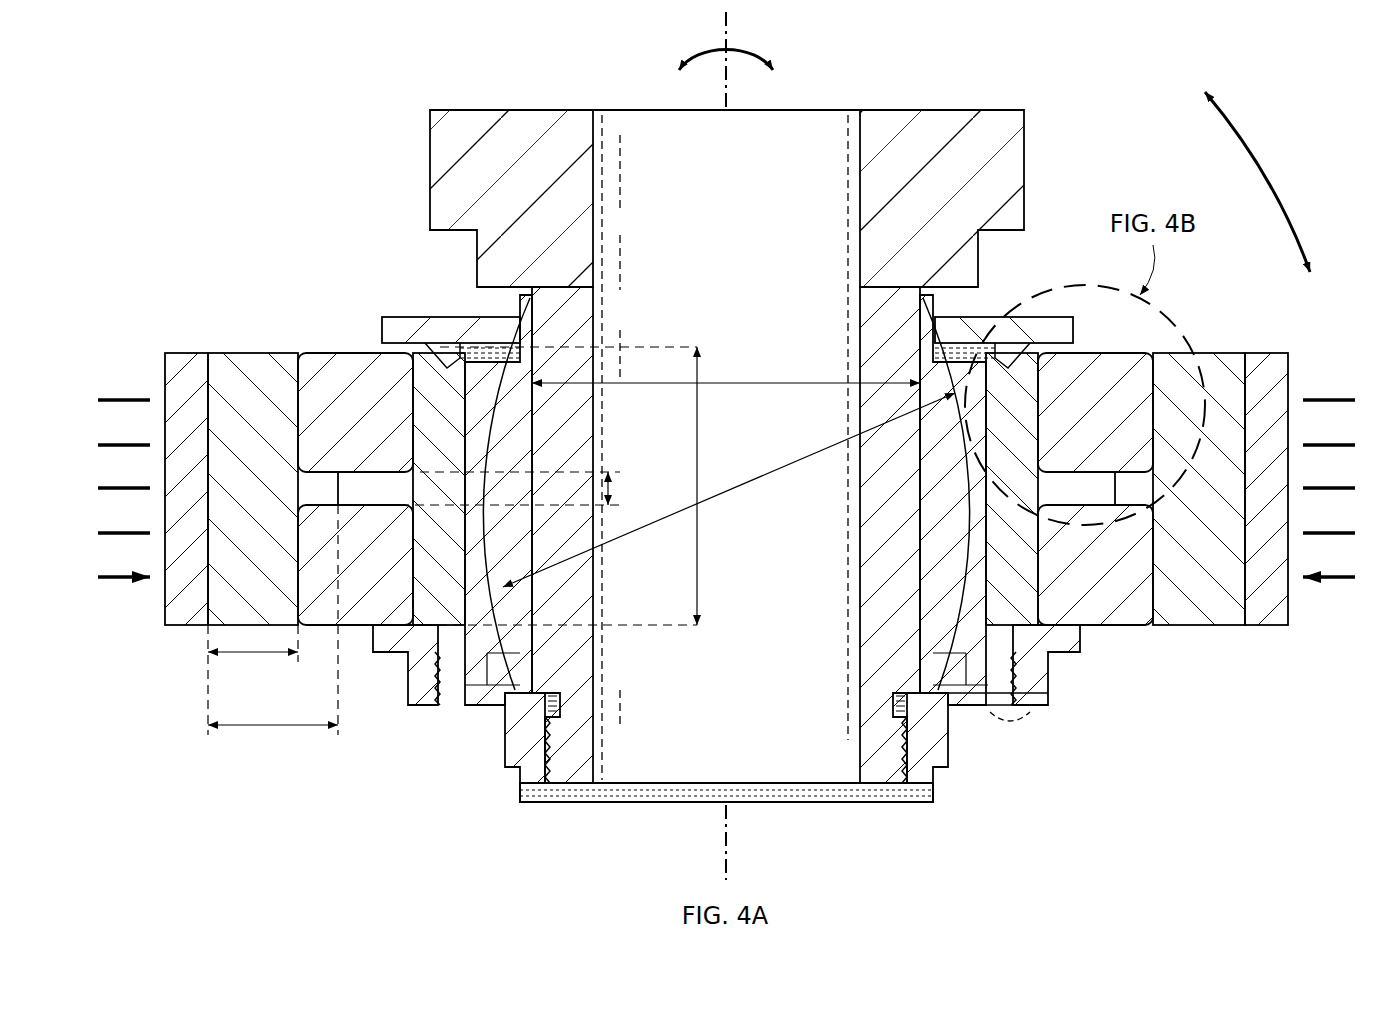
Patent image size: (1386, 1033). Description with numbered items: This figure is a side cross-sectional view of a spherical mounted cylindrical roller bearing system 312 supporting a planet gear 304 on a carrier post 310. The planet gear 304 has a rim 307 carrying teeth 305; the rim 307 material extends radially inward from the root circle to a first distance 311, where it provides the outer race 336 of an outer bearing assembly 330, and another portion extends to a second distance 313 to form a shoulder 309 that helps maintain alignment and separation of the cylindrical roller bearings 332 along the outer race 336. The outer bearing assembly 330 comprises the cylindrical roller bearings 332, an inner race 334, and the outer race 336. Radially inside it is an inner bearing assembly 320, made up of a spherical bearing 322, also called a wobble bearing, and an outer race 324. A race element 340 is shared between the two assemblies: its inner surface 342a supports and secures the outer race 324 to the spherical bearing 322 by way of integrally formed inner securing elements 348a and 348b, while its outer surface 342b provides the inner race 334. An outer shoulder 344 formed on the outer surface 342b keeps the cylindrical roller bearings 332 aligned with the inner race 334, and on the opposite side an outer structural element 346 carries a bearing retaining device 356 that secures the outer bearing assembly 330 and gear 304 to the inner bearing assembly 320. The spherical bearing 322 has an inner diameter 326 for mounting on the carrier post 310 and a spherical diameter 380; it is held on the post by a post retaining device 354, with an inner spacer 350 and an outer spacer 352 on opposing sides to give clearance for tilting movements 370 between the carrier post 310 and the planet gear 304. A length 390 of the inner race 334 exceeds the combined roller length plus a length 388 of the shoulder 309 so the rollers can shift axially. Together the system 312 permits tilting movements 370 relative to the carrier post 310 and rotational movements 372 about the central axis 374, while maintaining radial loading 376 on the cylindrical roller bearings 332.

The planet gear 304 is at (691, 462).
The teeth 305 is at (172, 608).
The rim 307 is at (248, 352).
The shoulder 309 is at (348, 472).
The carrier post 310 is at (945, 110).
The first distance 311 is at (252, 656).
The spherical mounted cylindrical roller bearing system 312 is at (313, 160).
The second distance 313 is at (270, 729).
The inner bearing assembly 320 is at (796, 439).
The spherical bearing 322 is at (725, 497).
The outer race 324 is at (726, 489).
The inner diameter 326 is at (725, 383).
The outer bearing assembly 330 is at (720, 473).
The cylindrical roller bearings 332 is at (362, 352).
The inner race 334 is at (410, 557).
The outer race 336 is at (305, 368).
The race element 340 is at (455, 448).
The inner surface 342a is at (520, 438).
The outer surface 342b is at (450, 400).
The outer shoulder 344 is at (1040, 318).
The outer structural element 346 is at (1005, 728).
The inner securing element 348a is at (532, 340).
The inner securing element 348b is at (515, 625).
The inner spacer 350 is at (596, 300).
The outer spacer 352 is at (545, 668).
The post retaining device 354 is at (505, 780).
The bearing retaining device 356 is at (1030, 695).
The tilting movements 370 is at (1270, 180).
The rotational movements 372 is at (780, 55).
The central axis 374 is at (722, 24).
The radial loading 376 is at (727, 461).
The spherical diameter 380 is at (725, 493).
The length 388 is at (612, 488).
The length 390 is at (700, 448).